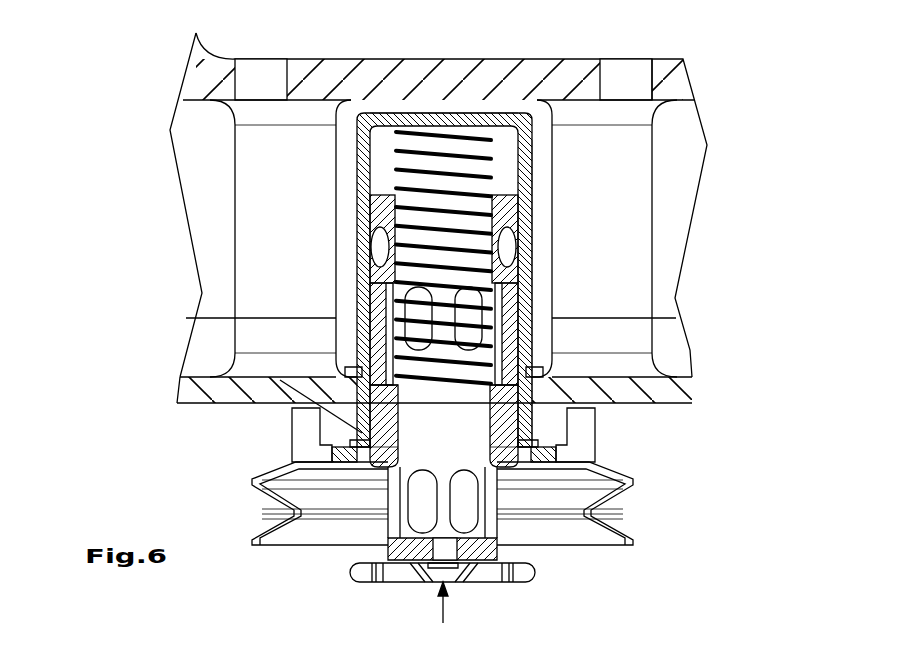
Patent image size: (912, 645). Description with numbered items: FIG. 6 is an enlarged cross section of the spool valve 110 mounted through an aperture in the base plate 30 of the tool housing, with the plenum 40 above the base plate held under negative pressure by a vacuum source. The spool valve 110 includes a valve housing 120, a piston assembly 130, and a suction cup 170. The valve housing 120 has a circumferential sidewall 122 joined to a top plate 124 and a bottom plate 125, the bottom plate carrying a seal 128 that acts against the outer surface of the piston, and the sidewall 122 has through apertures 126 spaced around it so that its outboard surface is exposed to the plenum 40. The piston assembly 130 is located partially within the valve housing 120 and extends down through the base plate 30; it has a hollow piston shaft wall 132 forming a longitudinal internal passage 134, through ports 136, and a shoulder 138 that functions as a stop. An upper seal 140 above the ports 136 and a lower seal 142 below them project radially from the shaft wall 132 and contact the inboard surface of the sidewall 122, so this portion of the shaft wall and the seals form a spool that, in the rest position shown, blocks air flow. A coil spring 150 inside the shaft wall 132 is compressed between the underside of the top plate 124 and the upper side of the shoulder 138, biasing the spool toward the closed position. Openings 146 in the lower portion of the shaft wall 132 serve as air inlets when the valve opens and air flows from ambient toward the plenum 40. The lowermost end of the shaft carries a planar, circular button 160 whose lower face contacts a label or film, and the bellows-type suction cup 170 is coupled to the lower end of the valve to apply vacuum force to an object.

The base plate 30 is at (665, 403).
The plenum 40 is at (590, 168).
The spool valve 110 is at (91, 135).
The valve housing 120 is at (350, 210).
The sidewall 122 is at (543, 205).
The top plate 124 is at (383, 113).
The bottom plate 125 is at (556, 455).
The through apertures 126 is at (373, 250).
The seal 128 is at (543, 373).
The piston assembly 130 is at (418, 402).
The piston shaft wall 132 is at (405, 398).
The longitudinal internal passage 134 is at (445, 430).
The through ports 136 is at (415, 327).
The shoulder 138 is at (548, 400).
The upper seal 140 is at (520, 283).
The lower seal 142 is at (522, 330).
The openings 146 is at (422, 497).
The spring 150 is at (452, 165).
The button 160 is at (395, 582).
The suction cup 170 is at (560, 548).